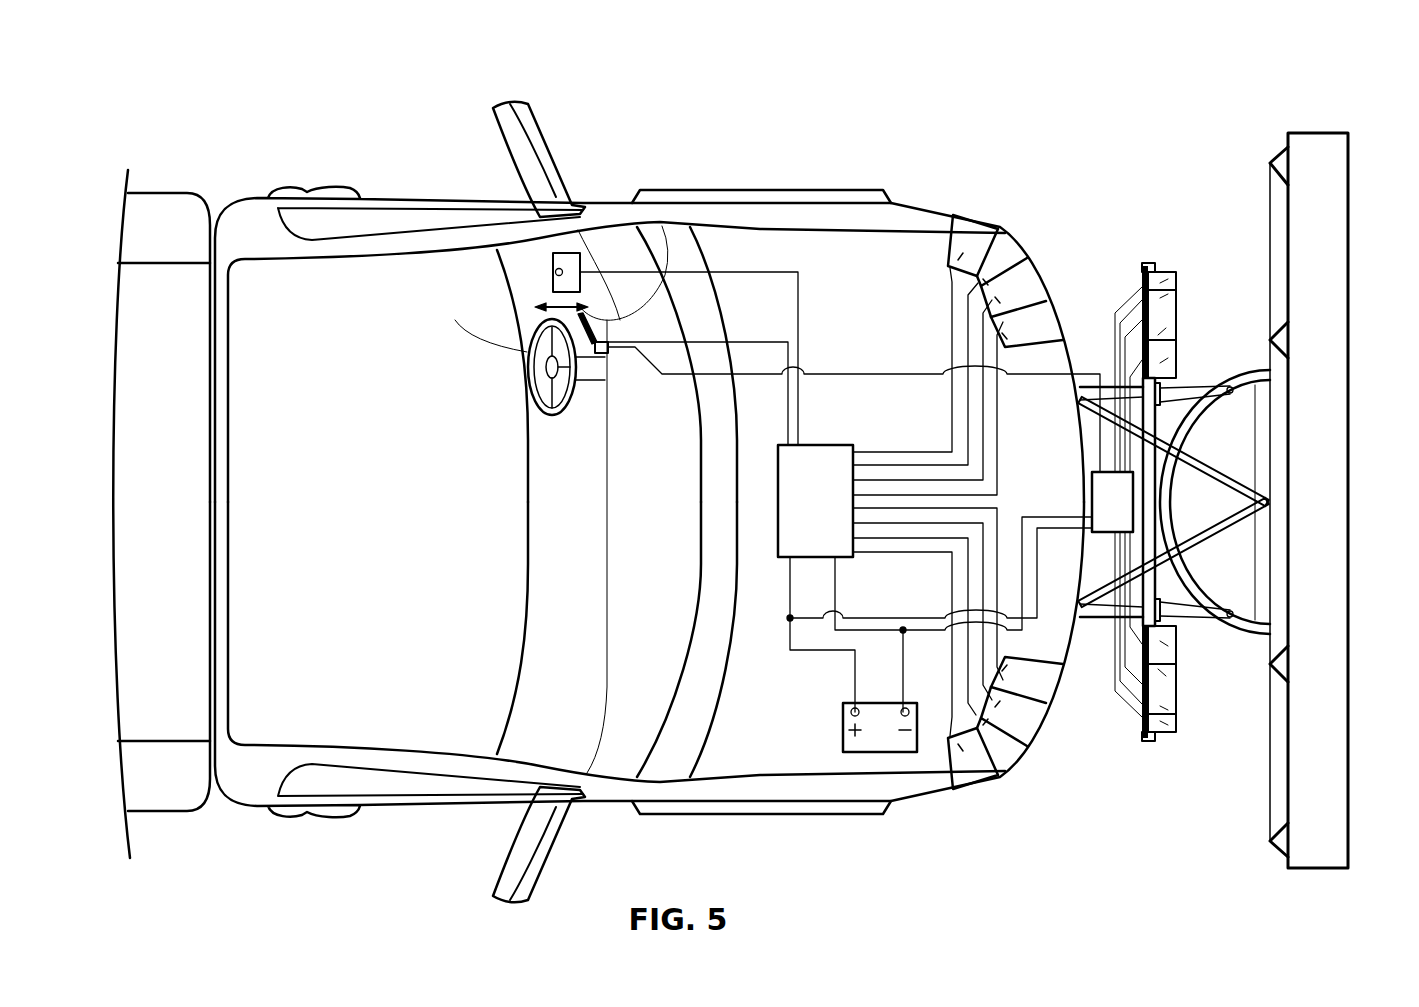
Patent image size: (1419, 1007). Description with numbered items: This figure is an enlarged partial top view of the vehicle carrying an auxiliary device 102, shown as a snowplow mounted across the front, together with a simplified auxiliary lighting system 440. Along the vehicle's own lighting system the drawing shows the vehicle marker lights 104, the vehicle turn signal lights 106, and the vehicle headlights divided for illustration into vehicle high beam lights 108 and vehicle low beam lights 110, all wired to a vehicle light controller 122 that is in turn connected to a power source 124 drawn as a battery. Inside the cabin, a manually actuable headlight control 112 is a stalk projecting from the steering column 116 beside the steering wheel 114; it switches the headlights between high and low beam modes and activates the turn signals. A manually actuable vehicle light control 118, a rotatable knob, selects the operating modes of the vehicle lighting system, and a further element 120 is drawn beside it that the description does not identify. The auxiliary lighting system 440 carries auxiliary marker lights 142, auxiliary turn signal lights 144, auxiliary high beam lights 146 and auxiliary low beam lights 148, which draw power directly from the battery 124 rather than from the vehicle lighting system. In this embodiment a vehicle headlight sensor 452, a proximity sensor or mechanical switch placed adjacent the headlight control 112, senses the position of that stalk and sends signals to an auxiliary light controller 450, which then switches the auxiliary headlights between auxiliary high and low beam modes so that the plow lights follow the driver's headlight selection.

The auxiliary device 102 is at (1352, 126).
The vehicle marker lights 104 is at (945, 243).
The vehicle turn signal lights 106 is at (1000, 232).
The vehicle high beam lights 108 is at (1033, 265).
The vehicle low beam lights 110 is at (1047, 302).
The manually actuable headlight control 112 is at (607, 320).
The steering wheel 114 is at (455, 320).
The steering column 116 is at (576, 410).
The manually actuable vehicle light control 118 is at (553, 268).
The direction indicator 120 is at (572, 300).
The vehicle light controller 122 is at (820, 445).
The power source 124 is at (840, 747).
The auxiliary marker lights 142 is at (1173, 282).
The auxiliary turn signal lights 144 is at (1172, 297).
The auxiliary high beam lights 146 is at (1177, 333).
The auxiliary low beam lights 148 is at (1175, 360).
The auxiliary lighting system 440 is at (1168, 256).
The auxiliary light controller 450 is at (1092, 483).
The vehicle headlight sensor 452 is at (610, 345).